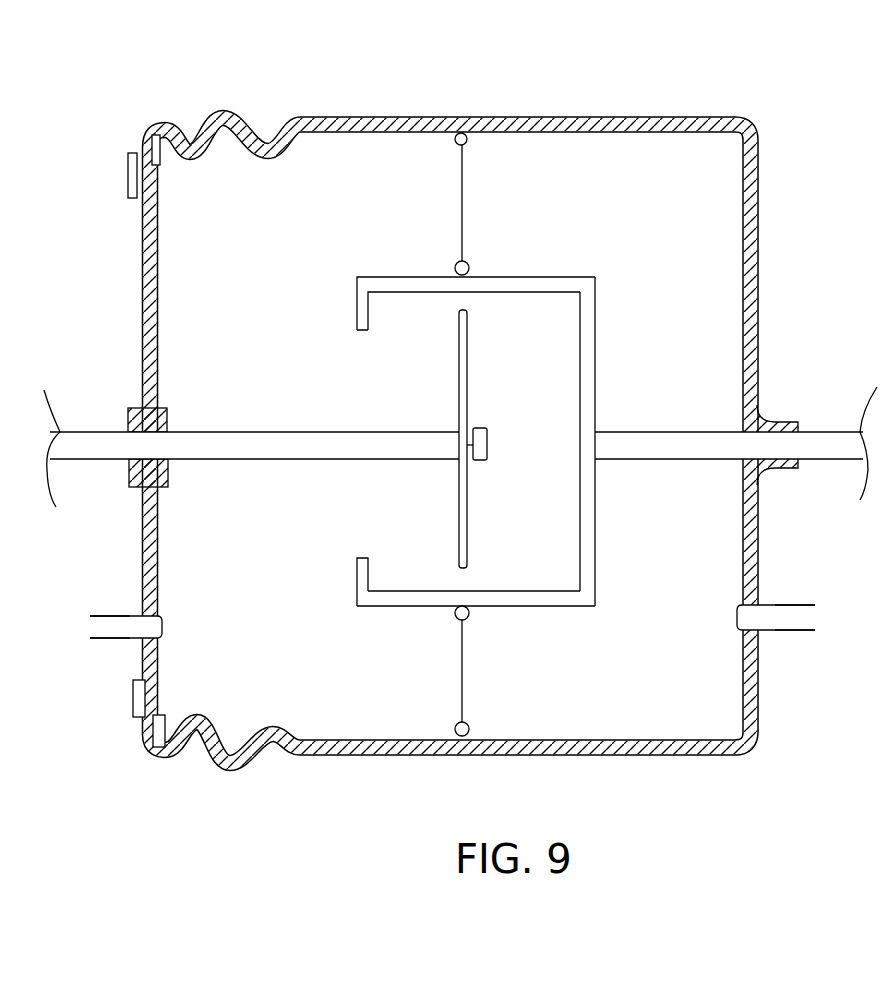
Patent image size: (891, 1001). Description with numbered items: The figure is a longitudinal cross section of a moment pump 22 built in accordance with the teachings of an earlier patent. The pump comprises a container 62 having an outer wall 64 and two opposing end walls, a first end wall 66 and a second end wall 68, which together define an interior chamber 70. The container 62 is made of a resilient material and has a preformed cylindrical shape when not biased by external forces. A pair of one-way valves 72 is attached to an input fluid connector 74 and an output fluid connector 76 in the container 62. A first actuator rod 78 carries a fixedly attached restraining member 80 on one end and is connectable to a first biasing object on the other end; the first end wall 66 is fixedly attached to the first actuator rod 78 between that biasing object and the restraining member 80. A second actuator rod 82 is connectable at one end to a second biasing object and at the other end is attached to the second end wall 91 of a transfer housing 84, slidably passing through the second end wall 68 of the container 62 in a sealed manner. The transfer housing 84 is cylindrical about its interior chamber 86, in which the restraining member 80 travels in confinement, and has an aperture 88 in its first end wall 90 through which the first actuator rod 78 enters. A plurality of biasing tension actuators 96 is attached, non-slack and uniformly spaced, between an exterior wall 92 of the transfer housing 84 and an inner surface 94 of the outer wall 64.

The moment pump 22 is at (460, 392).
The container 62 is at (567, 116).
The outer wall 64 is at (390, 116).
The first end wall 66 is at (142, 222).
The second end wall 68 is at (758, 248).
The interior chamber 70 is at (245, 364).
The one-way valves 72 is at (115, 612).
The input fluid connector 74 is at (108, 688).
The output fluid connector 76 is at (800, 632).
The first actuator rod 78 is at (262, 459).
The restraining member 80 is at (467, 360).
The second actuator rod 82 is at (667, 432).
The transfer housing 84 is at (533, 277).
The interior chamber 86 is at (543, 524).
The aperture 88 is at (421, 524).
The first end wall 90 is at (360, 577).
The second end wall 91 is at (597, 540).
The exterior wall 92 is at (545, 606).
The inner surface 94 is at (403, 740).
The biasing tension actuators 96 is at (447, 190).